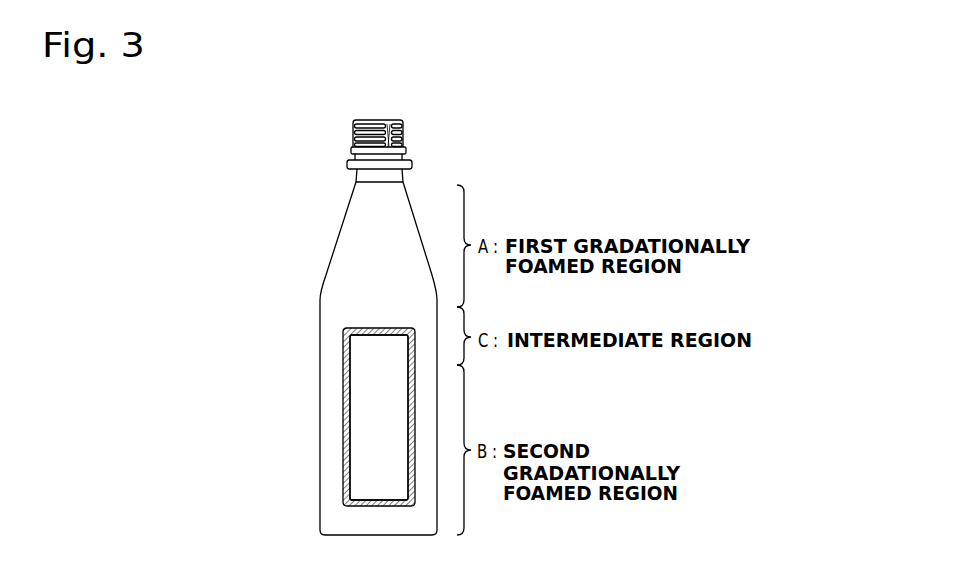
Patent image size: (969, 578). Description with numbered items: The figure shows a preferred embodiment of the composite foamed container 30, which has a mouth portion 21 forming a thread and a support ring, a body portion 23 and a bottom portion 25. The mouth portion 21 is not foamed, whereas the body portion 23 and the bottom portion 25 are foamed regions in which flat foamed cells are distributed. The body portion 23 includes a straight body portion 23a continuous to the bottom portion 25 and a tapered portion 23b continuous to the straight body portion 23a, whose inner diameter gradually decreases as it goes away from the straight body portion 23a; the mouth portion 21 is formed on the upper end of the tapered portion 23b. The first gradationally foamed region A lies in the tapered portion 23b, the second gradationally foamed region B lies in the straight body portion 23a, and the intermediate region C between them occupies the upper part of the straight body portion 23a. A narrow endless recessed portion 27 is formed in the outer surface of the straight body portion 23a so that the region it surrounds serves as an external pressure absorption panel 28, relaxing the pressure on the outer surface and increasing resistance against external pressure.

The composite foamed container 30 is at (298, 178).
The mouth portion 21 is at (410, 134).
The body portion 23 is at (260, 243).
The tapered portion 23b is at (333, 255).
The straight body portion 23a is at (320, 372).
The bottom portion 25 is at (337, 535).
The recessed portion 27 is at (343, 443).
The external pressure absorption panel 28 is at (388, 420).